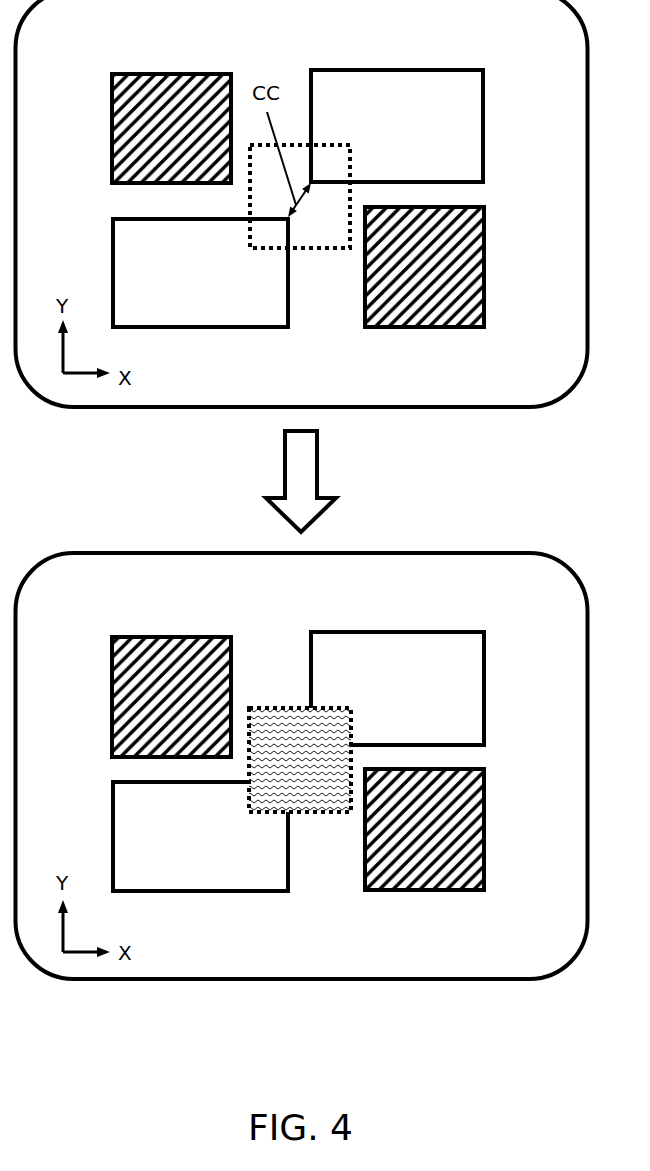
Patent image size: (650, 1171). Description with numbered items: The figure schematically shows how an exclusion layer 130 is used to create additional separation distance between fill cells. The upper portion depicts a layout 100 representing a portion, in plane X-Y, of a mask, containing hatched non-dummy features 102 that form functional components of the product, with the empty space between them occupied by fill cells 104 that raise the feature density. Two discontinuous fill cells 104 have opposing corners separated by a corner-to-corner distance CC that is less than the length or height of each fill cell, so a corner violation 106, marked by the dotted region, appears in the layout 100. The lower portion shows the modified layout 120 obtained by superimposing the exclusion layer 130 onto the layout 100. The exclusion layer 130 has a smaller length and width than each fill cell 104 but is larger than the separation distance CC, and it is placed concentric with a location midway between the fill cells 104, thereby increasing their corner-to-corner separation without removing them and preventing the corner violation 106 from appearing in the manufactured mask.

The layout 100 is at (92, 26).
The non-dummy feature 102 is at (133, 112).
The fill cell 104 is at (458, 90).
The corner violation 106 is at (338, 251).
The modified layout 120 is at (98, 594).
The exclusion layer 130 is at (320, 776).